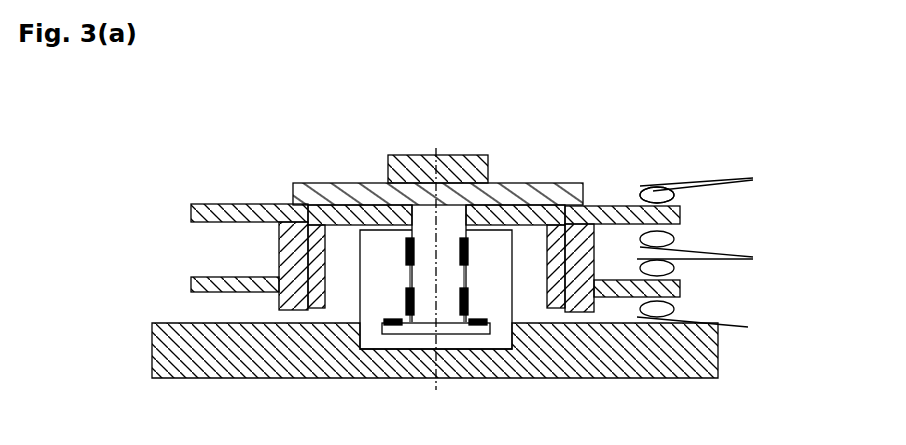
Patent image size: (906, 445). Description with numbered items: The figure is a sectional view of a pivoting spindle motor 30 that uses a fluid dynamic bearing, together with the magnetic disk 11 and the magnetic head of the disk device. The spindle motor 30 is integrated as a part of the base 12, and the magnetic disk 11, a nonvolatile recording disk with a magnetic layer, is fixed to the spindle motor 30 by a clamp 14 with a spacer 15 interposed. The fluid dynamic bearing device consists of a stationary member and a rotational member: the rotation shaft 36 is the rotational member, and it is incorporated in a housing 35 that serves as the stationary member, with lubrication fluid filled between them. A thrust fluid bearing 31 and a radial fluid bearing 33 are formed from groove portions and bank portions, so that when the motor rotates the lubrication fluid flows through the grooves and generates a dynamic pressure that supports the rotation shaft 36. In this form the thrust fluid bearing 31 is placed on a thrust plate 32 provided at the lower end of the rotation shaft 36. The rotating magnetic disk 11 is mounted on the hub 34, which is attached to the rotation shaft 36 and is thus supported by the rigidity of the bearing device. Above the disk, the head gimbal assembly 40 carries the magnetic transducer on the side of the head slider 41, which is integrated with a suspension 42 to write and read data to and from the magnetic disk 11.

The magnetic disk 11 is at (208, 200).
The base 12 is at (167, 339).
The clamp 14 is at (318, 190).
The spacer 15 is at (278, 243).
The spindle motor 30 is at (433, 135).
The thrust fluid bearing 31 is at (481, 326).
The thrust plate 32 is at (431, 330).
The radial fluid bearing 33 is at (472, 252).
The hub 34 is at (277, 305).
The housing 35 is at (403, 242).
The rotation shaft 36 is at (430, 267).
The head gimbal assembly 40 is at (683, 160).
The head slider 41 is at (675, 193).
The suspension 42 is at (727, 178).